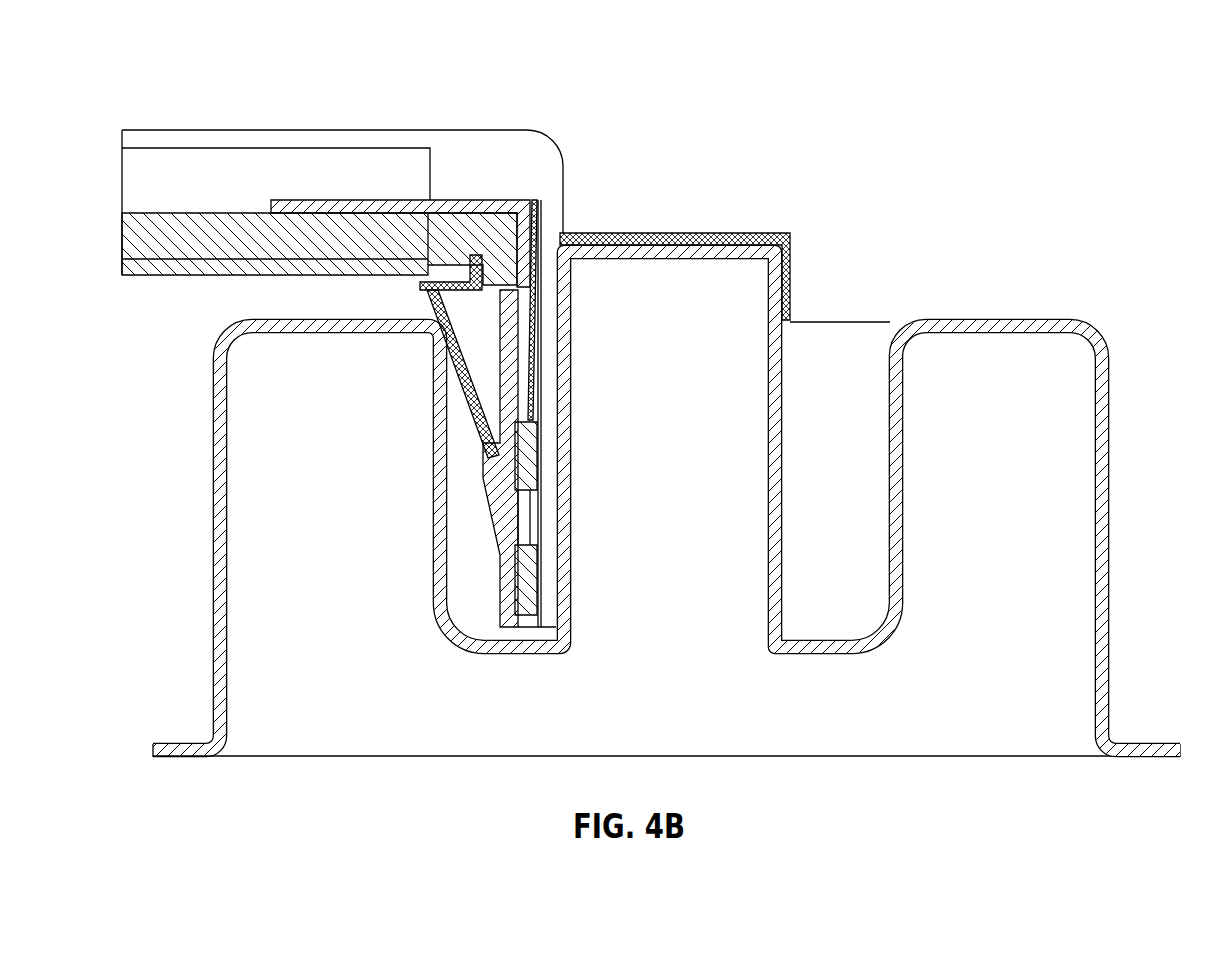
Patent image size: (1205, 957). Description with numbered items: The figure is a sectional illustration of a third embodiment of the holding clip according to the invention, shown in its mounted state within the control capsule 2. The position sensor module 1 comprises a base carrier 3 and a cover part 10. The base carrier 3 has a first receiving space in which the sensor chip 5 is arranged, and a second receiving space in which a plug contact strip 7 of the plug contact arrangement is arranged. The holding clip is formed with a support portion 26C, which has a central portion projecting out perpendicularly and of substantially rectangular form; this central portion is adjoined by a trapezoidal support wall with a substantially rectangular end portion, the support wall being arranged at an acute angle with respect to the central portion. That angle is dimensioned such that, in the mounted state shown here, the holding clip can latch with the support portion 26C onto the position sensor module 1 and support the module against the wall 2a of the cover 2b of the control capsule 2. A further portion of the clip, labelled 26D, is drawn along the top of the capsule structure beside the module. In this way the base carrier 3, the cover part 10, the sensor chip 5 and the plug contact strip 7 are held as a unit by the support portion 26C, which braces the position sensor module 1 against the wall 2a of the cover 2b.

The position sensor module 1 is at (451, 97).
The base carrier 3 is at (567, 156).
The plug contact strip 7 is at (524, 228).
The cover part 10 is at (122, 225).
The support portion 26C is at (421, 305).
The electrode terminal 26D is at (644, 231).
The control capsule 2 is at (872, 290).
The wall 2a is at (1114, 406).
The cover 2b is at (993, 318).
The sensor chip 5 is at (522, 455).